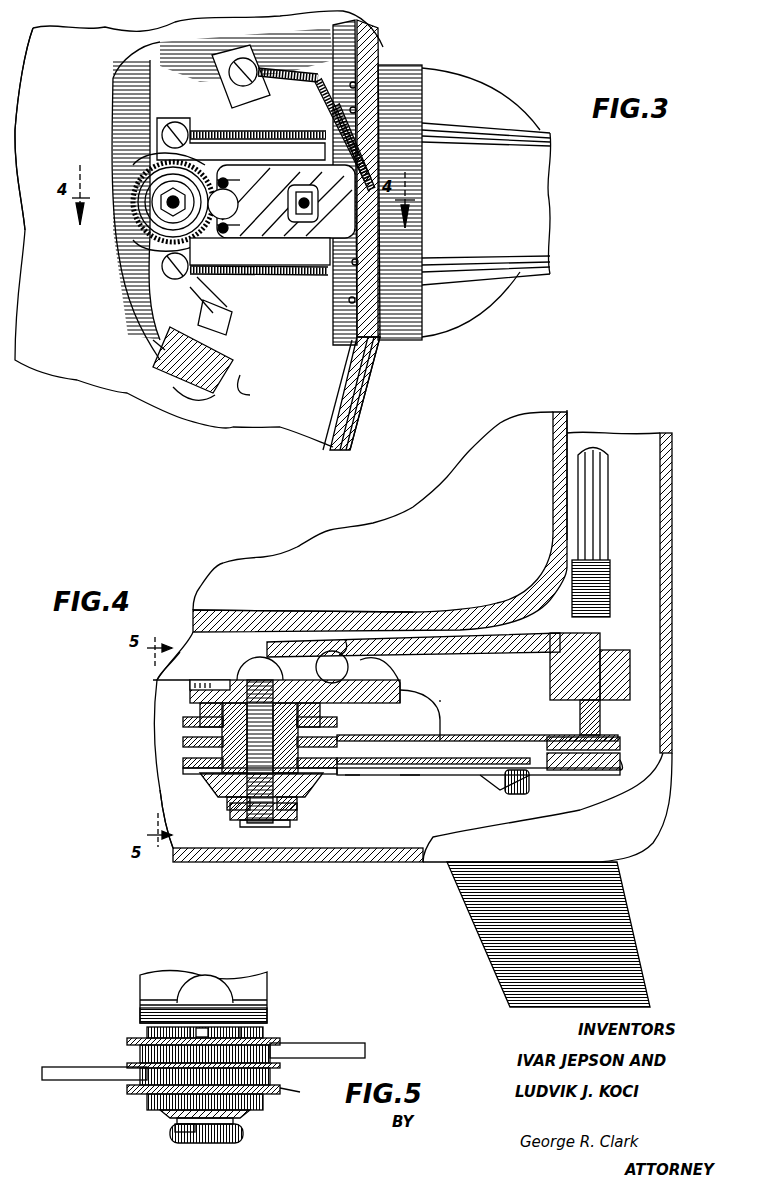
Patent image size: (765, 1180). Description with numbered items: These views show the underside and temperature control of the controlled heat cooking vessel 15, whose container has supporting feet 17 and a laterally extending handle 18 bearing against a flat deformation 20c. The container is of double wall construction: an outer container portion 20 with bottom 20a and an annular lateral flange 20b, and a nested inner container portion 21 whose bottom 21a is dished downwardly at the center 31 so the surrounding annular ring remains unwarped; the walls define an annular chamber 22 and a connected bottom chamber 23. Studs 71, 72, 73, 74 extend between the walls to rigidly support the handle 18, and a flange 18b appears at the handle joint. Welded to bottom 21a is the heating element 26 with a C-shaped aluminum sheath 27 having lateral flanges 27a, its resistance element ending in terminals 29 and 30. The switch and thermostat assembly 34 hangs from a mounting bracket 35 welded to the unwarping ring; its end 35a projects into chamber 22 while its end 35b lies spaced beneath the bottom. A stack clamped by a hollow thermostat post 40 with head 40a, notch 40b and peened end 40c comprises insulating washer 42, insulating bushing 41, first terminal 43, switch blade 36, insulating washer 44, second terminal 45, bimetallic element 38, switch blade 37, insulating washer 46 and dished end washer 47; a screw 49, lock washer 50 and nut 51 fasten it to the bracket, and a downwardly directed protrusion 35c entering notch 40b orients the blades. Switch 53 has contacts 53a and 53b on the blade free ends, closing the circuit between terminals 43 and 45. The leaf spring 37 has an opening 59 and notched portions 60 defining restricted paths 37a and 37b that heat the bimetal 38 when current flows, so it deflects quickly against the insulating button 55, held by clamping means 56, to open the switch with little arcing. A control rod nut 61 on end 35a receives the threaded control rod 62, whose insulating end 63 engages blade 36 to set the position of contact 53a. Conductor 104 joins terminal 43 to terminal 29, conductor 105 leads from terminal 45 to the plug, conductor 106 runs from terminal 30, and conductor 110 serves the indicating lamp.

In FIG. 4, the controlled heat cooking vessel 15 is at (205, 882).
In FIG. 4, the supporting feet 17 is at (462, 902).
In FIG. 3, the handle 18 is at (540, 137).
In FIG. 3, the housing flange 18b is at (422, 318).
In FIG. 3, the outer container portion 20 is at (360, 402).
In FIG. 4, the outer container portion 20 is at (672, 527).
In FIG. 3, the bottom of outer container portion 20a is at (352, 418).
In FIG. 4, the bottom of outer container portion 20a is at (265, 863).
In FIG. 3, the annular lateral flange 20b is at (366, 380).
In FIG. 3, the deformation 20c is at (378, 350).
In FIG. 3, the inner container portion 21 is at (247, 388).
In FIG. 4, the inner container portion 21 is at (566, 420).
In FIG. 3, the bottom of inner container portion 21a is at (153, 57).
In FIG. 4, the bottom of inner container portion 21a is at (357, 627).
In FIG. 3, the annular chamber 22 is at (341, 60).
In FIG. 4, the annular chamber 22 is at (645, 512).
In FIG. 4, the bottom chamber 23 is at (198, 838).
In FIG. 3, the heating element 26 is at (232, 357).
In FIG. 4, the heating element 26 is at (182, 650).
In FIG. 3, the sheath 27 is at (185, 398).
In FIG. 3, the lateral flanges 27a is at (160, 352).
In FIG. 3, the terminal 29 is at (212, 338).
In FIG. 4, the terminal 29 is at (337, 662).
In FIG. 3, the terminal 30 is at (218, 76).
In FIG. 3, the dished center 31 is at (122, 80).
In FIG. 4, the dished center 31 is at (262, 613).
In FIG. 4, the switch and thermostat assembly 34 is at (497, 702).
In FIG. 4, the mounting bracket 35 is at (468, 657).
In FIG. 5, the mounting bracket 35 is at (258, 960).
In FIG. 4, the end of bracket 35a is at (548, 655).
In FIG. 4, the end of bracket 35b is at (315, 675).
In FIG. 5, the end of bracket 35b is at (270, 1010).
In FIG. 4, the downwardly directed protrusion 35c is at (206, 674).
In FIG. 5, the downwardly directed protrusion 35c is at (230, 1016).
In FIG. 4, the switch blade 36 is at (460, 737).
In FIG. 5, the switch blade 36 is at (140, 1056).
In FIG. 3, the switch blade 37 is at (271, 172).
In FIG. 4, the switch blade 37 is at (450, 775).
In FIG. 5, the switch blade 37 is at (305, 1091).
In FIG. 3, the restricted conducting path 37a is at (242, 175).
In FIG. 3, the restricted conducting path 37b is at (244, 224).
In FIG. 4, the restricted conducting path 37b is at (351, 787).
In FIG. 4, the bimetallic element 38 is at (440, 762).
In FIG. 5, the bimetallic element 38 is at (130, 1088).
In FIG. 4, the thermostat post 40 is at (375, 700).
In FIG. 5, the thermostat post 40 is at (146, 1032).
In FIG. 5, the head 40a is at (264, 1030).
In FIG. 4, the notch 40b is at (190, 703).
In FIG. 5, the notch 40b is at (197, 1027).
In FIG. 4, the peened end 40c is at (228, 806).
In FIG. 5, the peened end 40c is at (178, 1128).
In FIG. 4, the insulating bushing 41 is at (205, 727).
In FIG. 4, the insulating washer 42 is at (200, 718).
In FIG. 5, the insulating washer 42 is at (145, 1041).
In FIG. 3, the first terminal 43 is at (162, 258).
In FIG. 5, the first terminal 43 is at (315, 1043).
In FIG. 4, the insulating washer 44 is at (190, 742).
In FIG. 5, the insulating washer 44 is at (283, 1068).
In FIG. 3, the second terminal 45 is at (193, 166).
In FIG. 4, the second terminal 45 is at (190, 762).
In FIG. 5, the second terminal 45 is at (85, 1067).
In FIG. 3, the insulating washer 46 is at (150, 166).
In FIG. 4, the insulating washer 46 is at (190, 773).
In FIG. 5, the insulating washer 46 is at (147, 1100).
In FIG. 3, the dished end washer 47 is at (142, 185).
In FIG. 4, the dished end washer 47 is at (215, 790).
In FIG. 5, the dished end washer 47 is at (170, 1115).
In FIG. 3, the screw 49 is at (152, 210).
In FIG. 4, the screw 49 is at (262, 823).
In FIG. 5, the screw 49 is at (205, 990).
In FIG. 4, the lock washer 50 is at (297, 807).
In FIG. 5, the lock washer 50 is at (234, 1120).
In FIG. 3, the nut 51 is at (162, 202).
In FIG. 4, the nut 51 is at (292, 823).
In FIG. 5, the nut 51 is at (243, 1137).
In FIG. 4, the switch 53 is at (620, 756).
In FIG. 4, the contact 53a is at (612, 740).
In FIG. 4, the contact 53b is at (620, 760).
In FIG. 3, the insulating button 55 is at (303, 212).
In FIG. 4, the insulating button 55 is at (514, 796).
In FIG. 3, the clamping means 56 is at (292, 186).
In FIG. 4, the clamping means 56 is at (498, 782).
In FIG. 3, the opening 59 is at (240, 203).
In FIG. 4, the opening 59 is at (380, 776).
In FIG. 3, the notched portions 60 is at (228, 180).
In FIG. 4, the control rod nut 61 is at (615, 695).
In FIG. 4, the control rod 62 is at (600, 505).
In FIG. 4, the insulating end 63 is at (602, 726).
In FIG. 3, the stud 71 is at (367, 275).
In FIG. 3, the stud 72 is at (372, 300).
In FIG. 3, the stud 73 is at (356, 85).
In FIG. 3, the stud 74 is at (380, 72).
In FIG. 3, the conductor 104 is at (218, 302).
In FIG. 4, the conductor 104 is at (370, 683).
In FIG. 3, the conductor 105 is at (246, 118).
In FIG. 3, the conductor 106 is at (288, 85).
In FIG. 3, the conductor 110 is at (256, 272).